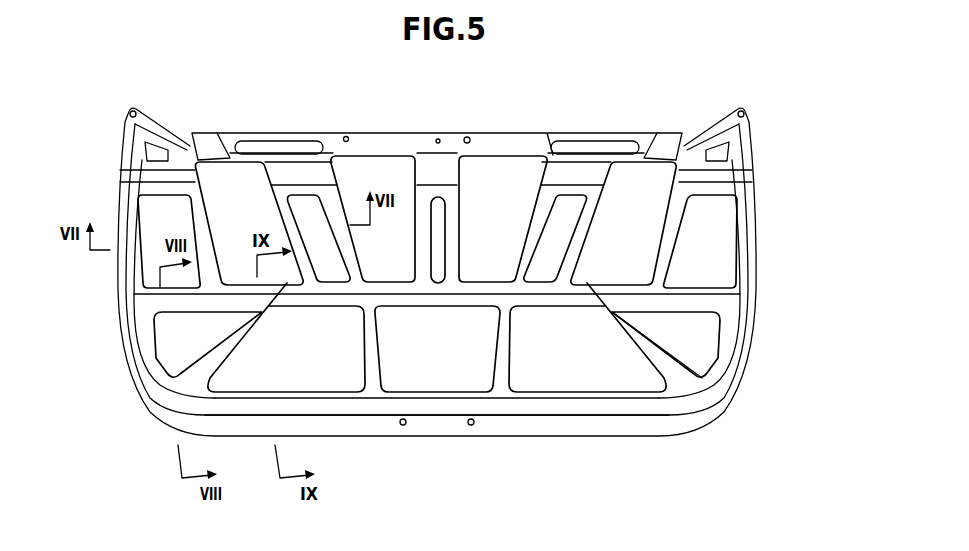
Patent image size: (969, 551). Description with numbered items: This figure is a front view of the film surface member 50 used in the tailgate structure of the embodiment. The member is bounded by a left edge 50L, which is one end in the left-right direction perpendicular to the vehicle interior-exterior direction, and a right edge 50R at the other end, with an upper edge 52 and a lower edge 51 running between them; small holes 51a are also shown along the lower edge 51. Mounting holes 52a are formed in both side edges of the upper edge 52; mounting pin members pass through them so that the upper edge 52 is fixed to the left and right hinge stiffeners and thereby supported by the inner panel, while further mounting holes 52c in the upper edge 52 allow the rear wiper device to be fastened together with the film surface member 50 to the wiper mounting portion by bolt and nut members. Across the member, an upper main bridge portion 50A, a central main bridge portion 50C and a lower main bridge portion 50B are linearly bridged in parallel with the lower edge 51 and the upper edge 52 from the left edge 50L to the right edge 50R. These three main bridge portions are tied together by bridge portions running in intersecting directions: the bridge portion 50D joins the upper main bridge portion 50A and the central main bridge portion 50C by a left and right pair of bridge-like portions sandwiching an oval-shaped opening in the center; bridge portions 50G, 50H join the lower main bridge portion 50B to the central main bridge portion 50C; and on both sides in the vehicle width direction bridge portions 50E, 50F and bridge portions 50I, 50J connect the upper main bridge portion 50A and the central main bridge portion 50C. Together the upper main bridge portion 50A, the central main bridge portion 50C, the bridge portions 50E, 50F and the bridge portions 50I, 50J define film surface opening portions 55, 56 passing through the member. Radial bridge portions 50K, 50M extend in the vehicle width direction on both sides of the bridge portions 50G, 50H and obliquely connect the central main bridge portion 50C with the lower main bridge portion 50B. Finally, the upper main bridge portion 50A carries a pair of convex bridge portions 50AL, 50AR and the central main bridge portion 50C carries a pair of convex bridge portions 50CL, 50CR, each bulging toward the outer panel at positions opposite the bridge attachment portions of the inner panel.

The film surface member 50 is at (759, 131).
The upper main bridge portion 50A is at (391, 140).
The convex bridge portion 50AL is at (212, 148).
The convex bridge portion 50AR is at (669, 148).
The lower main bridge portion 50B is at (590, 426).
The central main bridge portion 50C is at (549, 157).
The convex bridge portion 50CL is at (200, 333).
The convex bridge portion 50CR is at (627, 338).
The bridge portion 50D is at (450, 203).
The bridge portion 50E is at (308, 212).
The bridge portion 50F is at (566, 233).
The bridge portion 50G is at (368, 348).
The bridge portion 50H is at (510, 348).
The bridge portion 50I is at (182, 218).
The bridge portion 50J is at (672, 237).
The radial bridge portion 50K is at (218, 366).
The left edge 50L is at (118, 317).
The radial bridge portion 50M is at (660, 360).
The right edge 50R is at (757, 276).
The lower edge 51 is at (436, 440).
The lower flange hole 51a is at (403, 427).
The upper edge 52 is at (441, 133).
The mounting hole 52a is at (132, 110).
The mounting hole 52c is at (346, 134).
The film surface opening portion 55 is at (265, 208).
The film surface opening portion 56 is at (604, 205).